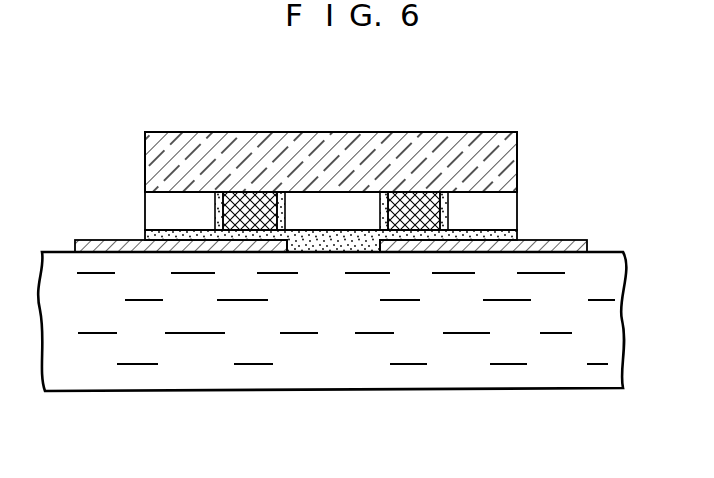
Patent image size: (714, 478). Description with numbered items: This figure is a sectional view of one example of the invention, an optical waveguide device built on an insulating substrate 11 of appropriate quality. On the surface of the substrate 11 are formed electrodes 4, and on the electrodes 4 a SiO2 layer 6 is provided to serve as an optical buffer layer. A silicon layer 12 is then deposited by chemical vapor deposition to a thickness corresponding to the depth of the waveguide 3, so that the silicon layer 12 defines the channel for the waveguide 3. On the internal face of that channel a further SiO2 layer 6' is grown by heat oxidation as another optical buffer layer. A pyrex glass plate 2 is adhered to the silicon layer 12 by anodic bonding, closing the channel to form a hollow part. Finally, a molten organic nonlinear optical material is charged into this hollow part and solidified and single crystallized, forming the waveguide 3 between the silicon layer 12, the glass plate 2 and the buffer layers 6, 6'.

The pyrex glass plate 2 is at (325, 132).
The waveguide 3 is at (418, 200).
The electrodes 4 is at (100, 242).
The SiO2 layer 6 is at (253, 154).
The SiO2 layer 6' is at (331, 338).
The insulating substrate 11 is at (434, 365).
The silicon layer 12 is at (153, 210).